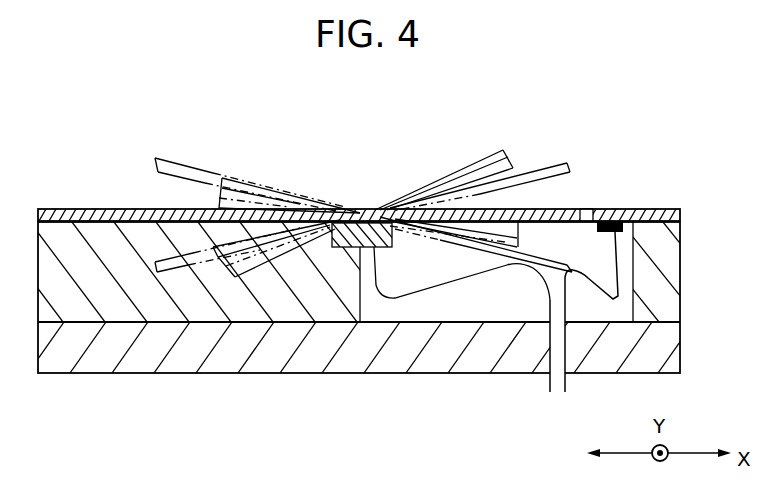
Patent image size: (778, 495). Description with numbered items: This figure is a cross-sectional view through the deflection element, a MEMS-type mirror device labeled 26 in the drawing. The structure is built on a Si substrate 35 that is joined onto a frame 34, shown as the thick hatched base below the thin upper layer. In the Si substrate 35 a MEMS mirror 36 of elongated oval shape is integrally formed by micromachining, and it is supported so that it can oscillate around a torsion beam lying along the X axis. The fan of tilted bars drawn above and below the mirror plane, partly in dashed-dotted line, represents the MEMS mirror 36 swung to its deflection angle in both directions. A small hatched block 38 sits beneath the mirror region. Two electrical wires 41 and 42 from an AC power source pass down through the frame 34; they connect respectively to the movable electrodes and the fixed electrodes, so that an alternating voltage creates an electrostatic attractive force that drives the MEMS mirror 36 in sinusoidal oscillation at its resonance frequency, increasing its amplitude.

The recording medium / thin film layer 26 is at (660, 203).
The frame 34 is at (663, 338).
The Si substrate 35 is at (120, 208).
The MEMS mirror 36 is at (551, 207).
The light receiving element 38 is at (390, 247).
The electrical wire 41 is at (548, 385).
The electrical wire 42 is at (566, 383).